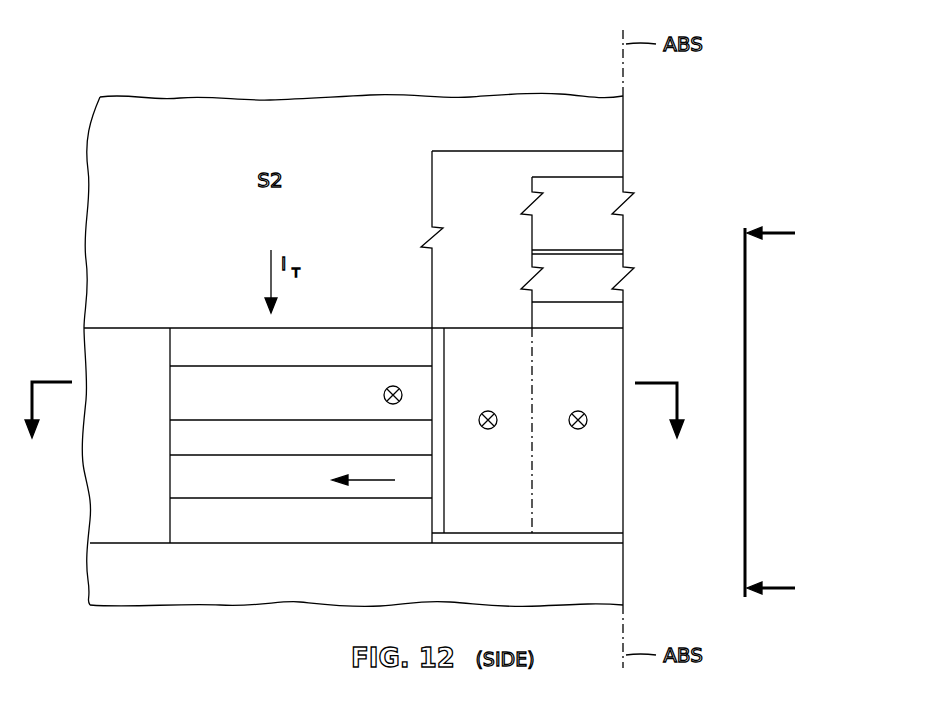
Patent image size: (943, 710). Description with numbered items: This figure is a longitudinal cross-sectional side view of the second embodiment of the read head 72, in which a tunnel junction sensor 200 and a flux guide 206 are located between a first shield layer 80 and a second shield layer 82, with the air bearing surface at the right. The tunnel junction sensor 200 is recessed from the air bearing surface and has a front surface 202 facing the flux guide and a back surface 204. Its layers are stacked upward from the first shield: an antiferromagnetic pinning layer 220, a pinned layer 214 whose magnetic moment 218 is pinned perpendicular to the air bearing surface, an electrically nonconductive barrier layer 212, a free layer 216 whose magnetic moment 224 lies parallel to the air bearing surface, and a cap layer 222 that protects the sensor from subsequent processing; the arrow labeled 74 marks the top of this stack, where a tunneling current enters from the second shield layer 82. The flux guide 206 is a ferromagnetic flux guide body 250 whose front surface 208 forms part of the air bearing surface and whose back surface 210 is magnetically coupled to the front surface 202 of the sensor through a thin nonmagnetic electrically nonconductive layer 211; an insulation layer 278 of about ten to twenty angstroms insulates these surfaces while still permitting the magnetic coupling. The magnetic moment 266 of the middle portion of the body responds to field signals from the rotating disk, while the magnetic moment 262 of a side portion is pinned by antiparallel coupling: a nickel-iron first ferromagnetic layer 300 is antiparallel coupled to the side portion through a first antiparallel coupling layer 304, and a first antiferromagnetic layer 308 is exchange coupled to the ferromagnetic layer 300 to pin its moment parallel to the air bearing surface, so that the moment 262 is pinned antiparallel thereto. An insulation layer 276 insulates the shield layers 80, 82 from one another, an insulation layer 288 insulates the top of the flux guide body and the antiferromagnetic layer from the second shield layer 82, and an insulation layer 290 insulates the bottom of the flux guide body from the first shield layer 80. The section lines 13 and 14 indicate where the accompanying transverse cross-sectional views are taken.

The section line 13- 13 is at (788, 411).
The section line 14- 14 is at (355, 426).
The read head 72 is at (286, 72).
The first shield layer 80 is at (278, 600).
The second shield layer 82 is at (163, 103).
The sensor top 74 is at (336, 316).
The tunnel junction sensor 200 is at (190, 316).
The front surface 202 is at (438, 381).
The back surface 204 is at (172, 395).
The flux guide 206 is at (472, 315).
The front surface 208 is at (626, 495).
The back surface 210 is at (440, 428).
The thin nonmagnetic electrically nonconductive layer 211 is at (440, 472).
The barrier layer 212 is at (172, 438).
The pinned layer 214 is at (172, 479).
The free layer 216 is at (172, 379).
The magnetic moment of pinned layer 218 is at (380, 481).
The antiferromagnetic pinning layer 220 is at (206, 535).
The cap layer 222 is at (172, 347).
The magnetic moment of free layer 224 is at (384, 395).
The flux guide body 250 is at (515, 418).
The magnetic moment of first side portion 262 is at (578, 411).
The magnetic moment of middle portion 266 is at (488, 411).
The insulation layer 276 is at (105, 510).
The insulation layer 278 is at (440, 508).
The insulation layer 288 is at (465, 160).
The insulation layer 290 is at (577, 540).
The first ferromagnetic layer 300 is at (636, 262).
The first antiparallel coupling layer 304 is at (636, 317).
The first antiferromagnetic layer 308 is at (636, 230).